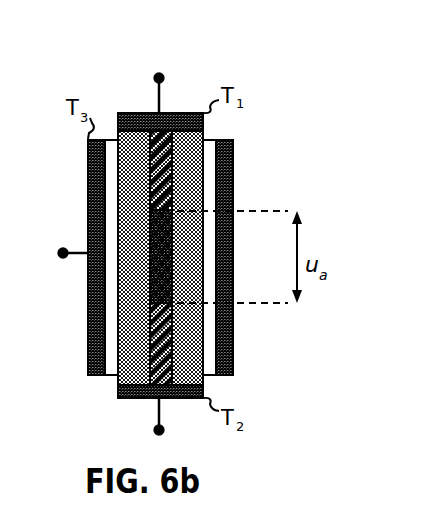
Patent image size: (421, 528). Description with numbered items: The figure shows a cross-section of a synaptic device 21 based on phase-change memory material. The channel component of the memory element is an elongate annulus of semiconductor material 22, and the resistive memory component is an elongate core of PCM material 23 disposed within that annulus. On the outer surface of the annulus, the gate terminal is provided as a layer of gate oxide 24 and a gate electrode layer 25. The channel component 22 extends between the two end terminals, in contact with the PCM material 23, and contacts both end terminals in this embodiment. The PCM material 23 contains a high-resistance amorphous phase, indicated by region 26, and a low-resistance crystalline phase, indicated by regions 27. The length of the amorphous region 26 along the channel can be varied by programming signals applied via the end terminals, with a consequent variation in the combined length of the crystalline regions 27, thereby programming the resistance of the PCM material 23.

The synaptic device 21 is at (280, 91).
The semiconductor material 22 is at (130, 223).
The PCM material 23 is at (152, 188).
The gate oxide 24 is at (110, 322).
The gate electrode layer 25 is at (98, 280).
The amorphous phase region 26 is at (170, 263).
The crystalline phase regions 27 is at (170, 172).